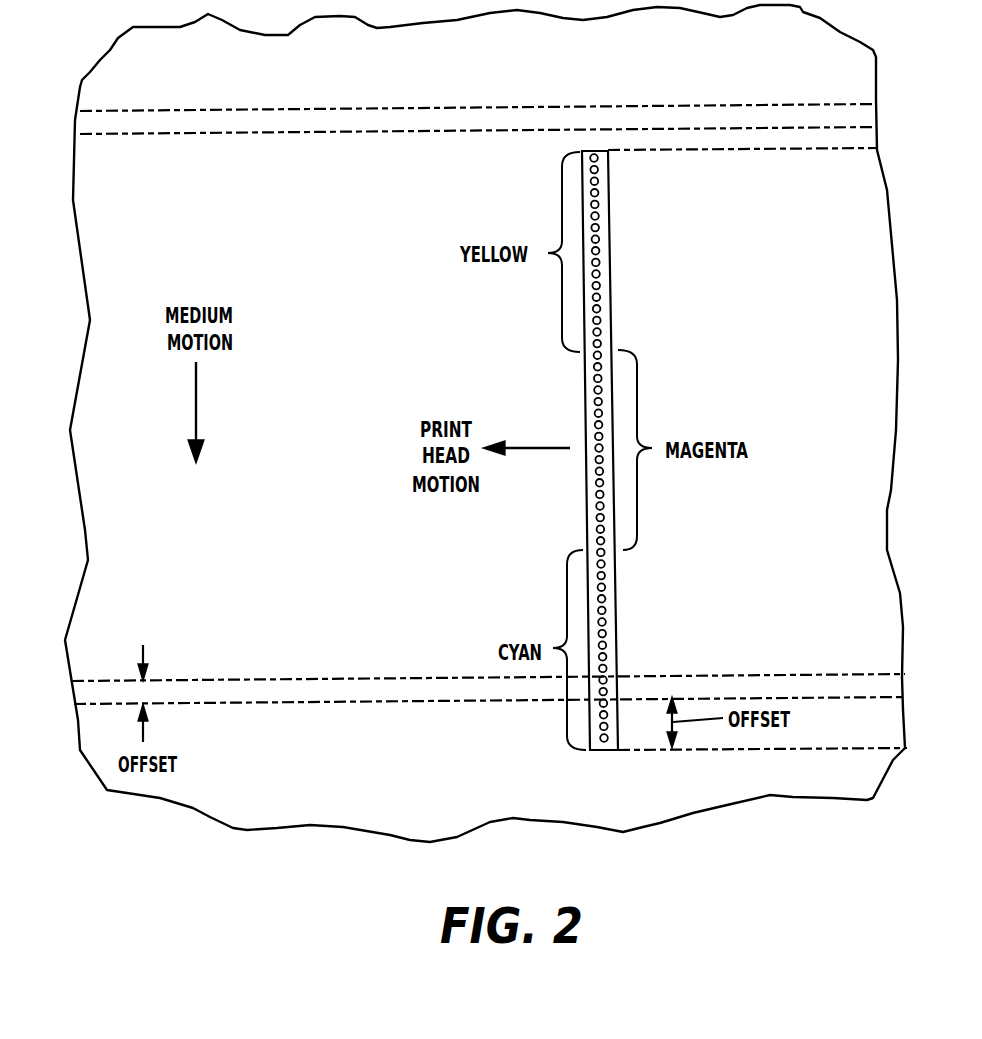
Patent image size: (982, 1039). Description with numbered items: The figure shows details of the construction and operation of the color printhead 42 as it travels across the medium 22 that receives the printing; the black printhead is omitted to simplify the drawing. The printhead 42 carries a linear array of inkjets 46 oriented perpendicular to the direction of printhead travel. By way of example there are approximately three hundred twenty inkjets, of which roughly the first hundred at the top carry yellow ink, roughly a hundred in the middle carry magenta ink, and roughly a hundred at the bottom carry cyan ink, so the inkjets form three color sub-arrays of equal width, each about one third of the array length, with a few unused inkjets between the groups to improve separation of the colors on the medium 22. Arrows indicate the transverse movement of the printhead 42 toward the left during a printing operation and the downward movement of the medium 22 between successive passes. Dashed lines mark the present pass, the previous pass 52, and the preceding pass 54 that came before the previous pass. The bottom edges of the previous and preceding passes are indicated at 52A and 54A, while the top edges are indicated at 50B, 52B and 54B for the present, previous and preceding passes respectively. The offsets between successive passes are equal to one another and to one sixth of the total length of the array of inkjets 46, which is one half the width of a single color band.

The medium 22 is at (380, 805).
The color printhead 42 is at (629, 395).
The linear array of inkjets 46 is at (680, 448).
The top edge of present pass 50B is at (832, 148).
The previous pass 52 is at (490, 786).
The bottom edge of previous pass 52A is at (384, 707).
The top edge of previous pass 52B is at (805, 104).
The preceding pass 54 is at (488, 628).
The bottom edge of preceding pass 54A is at (387, 678).
The top edge of preceding pass 54B is at (760, 127).